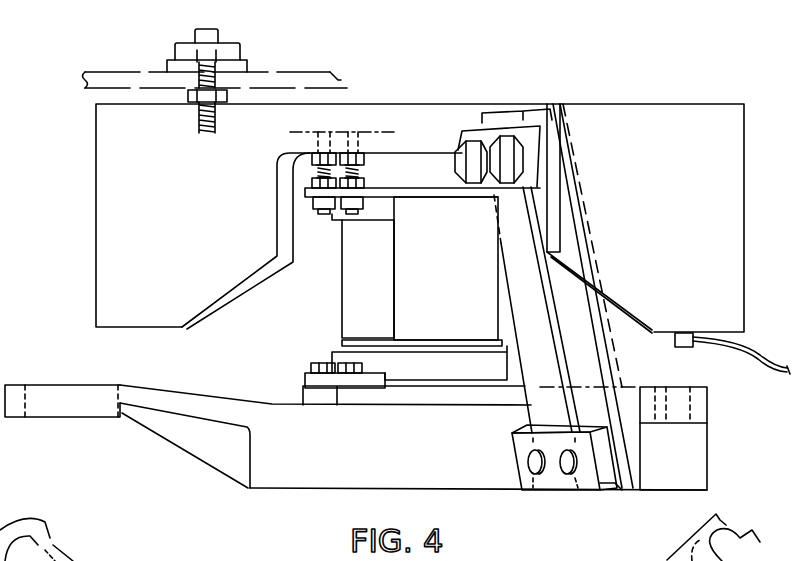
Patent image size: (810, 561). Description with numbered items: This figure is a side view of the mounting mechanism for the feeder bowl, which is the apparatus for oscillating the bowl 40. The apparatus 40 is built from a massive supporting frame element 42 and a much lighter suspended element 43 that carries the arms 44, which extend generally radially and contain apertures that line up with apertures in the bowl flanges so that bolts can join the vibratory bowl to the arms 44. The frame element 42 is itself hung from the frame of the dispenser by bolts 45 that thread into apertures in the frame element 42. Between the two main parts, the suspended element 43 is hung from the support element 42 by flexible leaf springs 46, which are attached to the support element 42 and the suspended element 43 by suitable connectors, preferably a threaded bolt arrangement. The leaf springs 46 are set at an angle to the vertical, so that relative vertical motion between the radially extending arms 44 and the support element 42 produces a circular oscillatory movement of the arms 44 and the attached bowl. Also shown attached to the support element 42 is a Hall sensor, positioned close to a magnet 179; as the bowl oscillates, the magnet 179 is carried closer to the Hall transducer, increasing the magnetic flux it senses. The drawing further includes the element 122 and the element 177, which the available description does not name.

The apparatus for oscillating the bowl 40 is at (378, 218).
The supporting frame element 42 is at (195, 231).
The suspended element 43 is at (292, 491).
The arms 44 is at (67, 418).
The bolts 45 is at (219, 35).
The flexible leaf springs 46 is at (515, 334).
The sensor blade 122 is at (674, 344).
The cable 177 is at (722, 377).
The magnet 179 is at (690, 387).